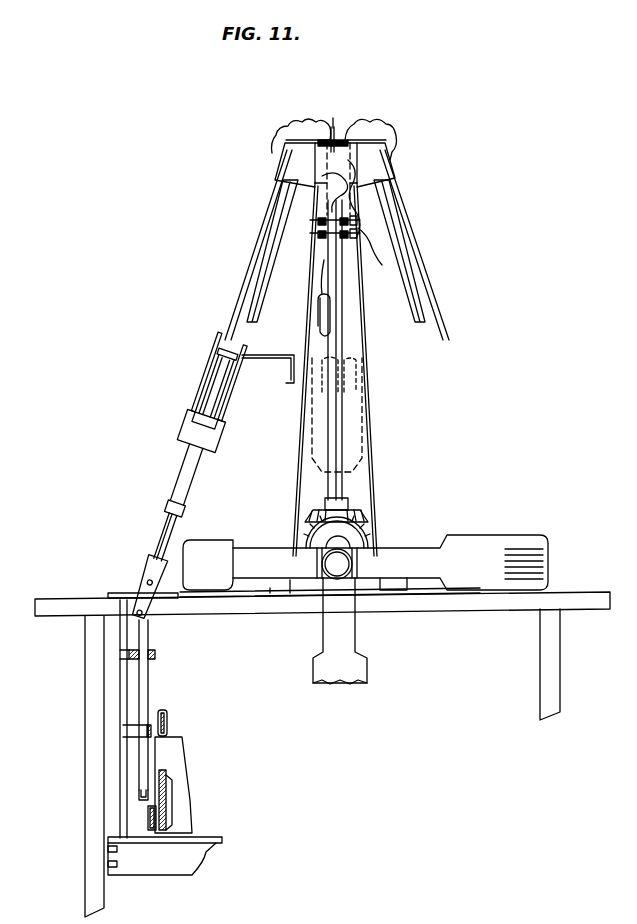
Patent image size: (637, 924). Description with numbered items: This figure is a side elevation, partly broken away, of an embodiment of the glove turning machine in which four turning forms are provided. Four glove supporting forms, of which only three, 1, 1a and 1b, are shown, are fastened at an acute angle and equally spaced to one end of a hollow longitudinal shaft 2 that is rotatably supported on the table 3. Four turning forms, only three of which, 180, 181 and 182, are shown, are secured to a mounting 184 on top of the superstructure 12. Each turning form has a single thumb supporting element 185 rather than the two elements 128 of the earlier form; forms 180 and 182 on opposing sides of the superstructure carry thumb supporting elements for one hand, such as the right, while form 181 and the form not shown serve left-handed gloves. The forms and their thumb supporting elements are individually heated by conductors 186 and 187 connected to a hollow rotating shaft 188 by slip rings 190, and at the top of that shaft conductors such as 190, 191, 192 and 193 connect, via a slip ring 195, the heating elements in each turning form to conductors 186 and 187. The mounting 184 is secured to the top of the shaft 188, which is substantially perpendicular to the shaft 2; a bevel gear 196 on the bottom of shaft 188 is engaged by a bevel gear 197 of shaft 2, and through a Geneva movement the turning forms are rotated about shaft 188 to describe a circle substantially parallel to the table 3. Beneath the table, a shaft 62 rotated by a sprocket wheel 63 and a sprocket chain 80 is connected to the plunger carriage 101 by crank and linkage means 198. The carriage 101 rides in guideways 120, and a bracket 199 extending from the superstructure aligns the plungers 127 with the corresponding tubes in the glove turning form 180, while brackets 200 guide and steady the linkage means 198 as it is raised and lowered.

The glove supporting form 1 is at (352, 440).
The glove supporting form 1a is at (248, 550).
The glove supporting form 1b is at (317, 665).
The hollow longitudinal shaft 2 is at (330, 574).
The table 3 is at (508, 606).
The superstructure 12 is at (368, 350).
The shaft 62 is at (150, 816).
The sprocket wheel 63 is at (170, 843).
The sprocket chain 80 is at (168, 718).
The plunger carriage 101 is at (184, 497).
The guideways 120 is at (218, 352).
The plunger 127 is at (214, 385).
The thumb supporting element 128 is at (220, 410).
The turning form 180 is at (272, 212).
The turning form 181 is at (328, 290).
The turning form 182 is at (398, 216).
The mounting 184 is at (374, 160).
The thumb supporting element 185 is at (270, 262).
The conductor 186 is at (380, 252).
The conductor 187 is at (356, 228).
The hollow rotating shaft 188 is at (333, 406).
The slip rings 190 is at (322, 128).
The conductor 191 is at (286, 130).
The conductor 192 is at (348, 130).
The conductor 193 is at (374, 128).
The slip ring 195 is at (296, 141).
The bevel gear 196 is at (366, 512).
The bevel gear 197 is at (356, 538).
The crank and linkage means 198 is at (140, 790).
The bracket 199 is at (266, 355).
The brackets 200 is at (152, 720).